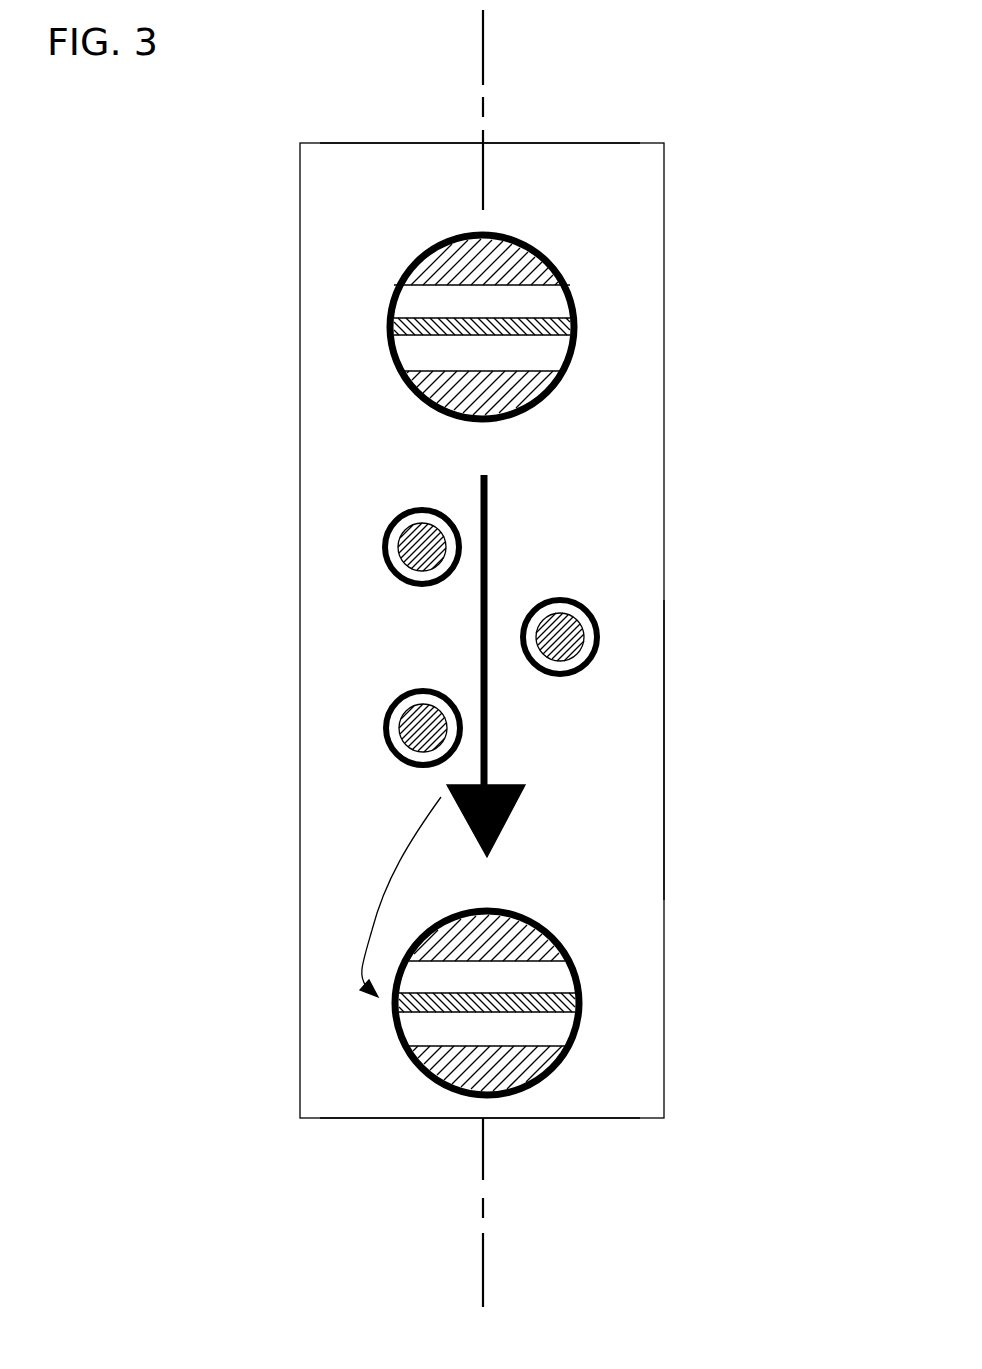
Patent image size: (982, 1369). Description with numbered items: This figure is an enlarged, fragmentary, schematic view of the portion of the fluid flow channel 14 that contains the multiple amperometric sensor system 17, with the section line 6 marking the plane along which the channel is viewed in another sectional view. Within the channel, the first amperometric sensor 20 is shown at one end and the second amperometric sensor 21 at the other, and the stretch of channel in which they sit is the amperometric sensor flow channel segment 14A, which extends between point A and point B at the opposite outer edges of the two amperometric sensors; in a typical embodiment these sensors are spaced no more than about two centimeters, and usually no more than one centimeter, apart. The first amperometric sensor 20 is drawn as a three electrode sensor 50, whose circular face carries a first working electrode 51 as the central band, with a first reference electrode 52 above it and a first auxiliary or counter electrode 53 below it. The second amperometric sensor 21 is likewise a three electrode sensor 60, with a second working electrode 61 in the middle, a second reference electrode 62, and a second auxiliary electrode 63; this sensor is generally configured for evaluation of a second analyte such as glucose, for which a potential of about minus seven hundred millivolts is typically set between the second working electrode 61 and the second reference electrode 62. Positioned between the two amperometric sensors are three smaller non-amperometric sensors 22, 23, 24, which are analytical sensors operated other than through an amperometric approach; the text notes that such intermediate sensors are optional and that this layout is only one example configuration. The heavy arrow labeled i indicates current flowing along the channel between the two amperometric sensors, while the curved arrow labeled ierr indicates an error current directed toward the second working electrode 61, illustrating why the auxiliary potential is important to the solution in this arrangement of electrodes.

The fluid flow channel 14 is at (666, 1094).
The amperometric sensor flow channel segment 14A is at (638, 724).
The multiple amperometric sensor system 17 is at (683, 1165).
The section line 6- 6 is at (470, 60).
The point A is at (344, 1120).
The point B is at (437, 143).
The first amperometric sensor 20 is at (482, 304).
The three electrode sensor 50 is at (580, 281).
The first working electrode 51 is at (390, 325).
The first reference electrode 52 is at (433, 262).
The first auxiliary electrode 53 is at (428, 390).
The second amperometric sensor 21 is at (485, 990).
The three electrode sensor 60 is at (588, 954).
The second working electrode 61 is at (393, 1008).
The second reference electrode 62 is at (431, 1072).
The second auxiliary electrode 63 is at (437, 943).
The non-amperometric sensor 22 is at (385, 556).
The non-amperometric sensor 23 is at (385, 748).
The non-amperometric sensor 24 is at (593, 652).
The current flow i is at (486, 666).
The error current ierr is at (393, 897).